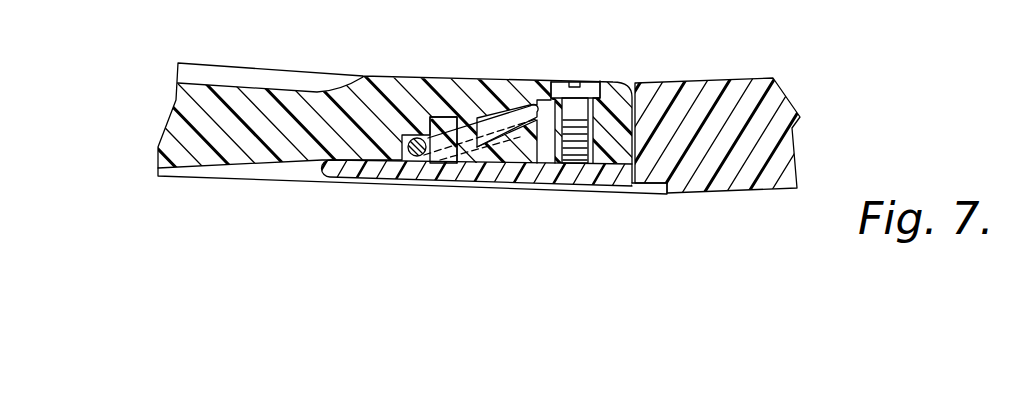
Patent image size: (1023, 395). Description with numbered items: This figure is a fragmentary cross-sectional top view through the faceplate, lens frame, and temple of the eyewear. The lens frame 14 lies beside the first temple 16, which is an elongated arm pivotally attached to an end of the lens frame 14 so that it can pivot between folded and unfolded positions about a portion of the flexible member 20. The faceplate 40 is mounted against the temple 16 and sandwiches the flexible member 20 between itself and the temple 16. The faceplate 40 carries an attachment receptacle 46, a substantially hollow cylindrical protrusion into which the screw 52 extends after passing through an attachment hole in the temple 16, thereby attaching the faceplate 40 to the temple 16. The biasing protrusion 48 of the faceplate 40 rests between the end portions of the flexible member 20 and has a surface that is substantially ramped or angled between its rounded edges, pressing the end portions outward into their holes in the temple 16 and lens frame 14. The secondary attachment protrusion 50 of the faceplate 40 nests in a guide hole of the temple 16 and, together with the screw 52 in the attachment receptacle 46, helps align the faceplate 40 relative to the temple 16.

The lens frame 14 is at (743, 185).
The first temple 16 is at (252, 160).
The flexible member 20 is at (414, 138).
The faceplate 40 is at (458, 177).
The attachment receptacle 46 is at (610, 158).
The biasing protrusion 48 is at (520, 116).
The secondary attachment protrusion 50 is at (441, 125).
The screw 52 is at (589, 92).